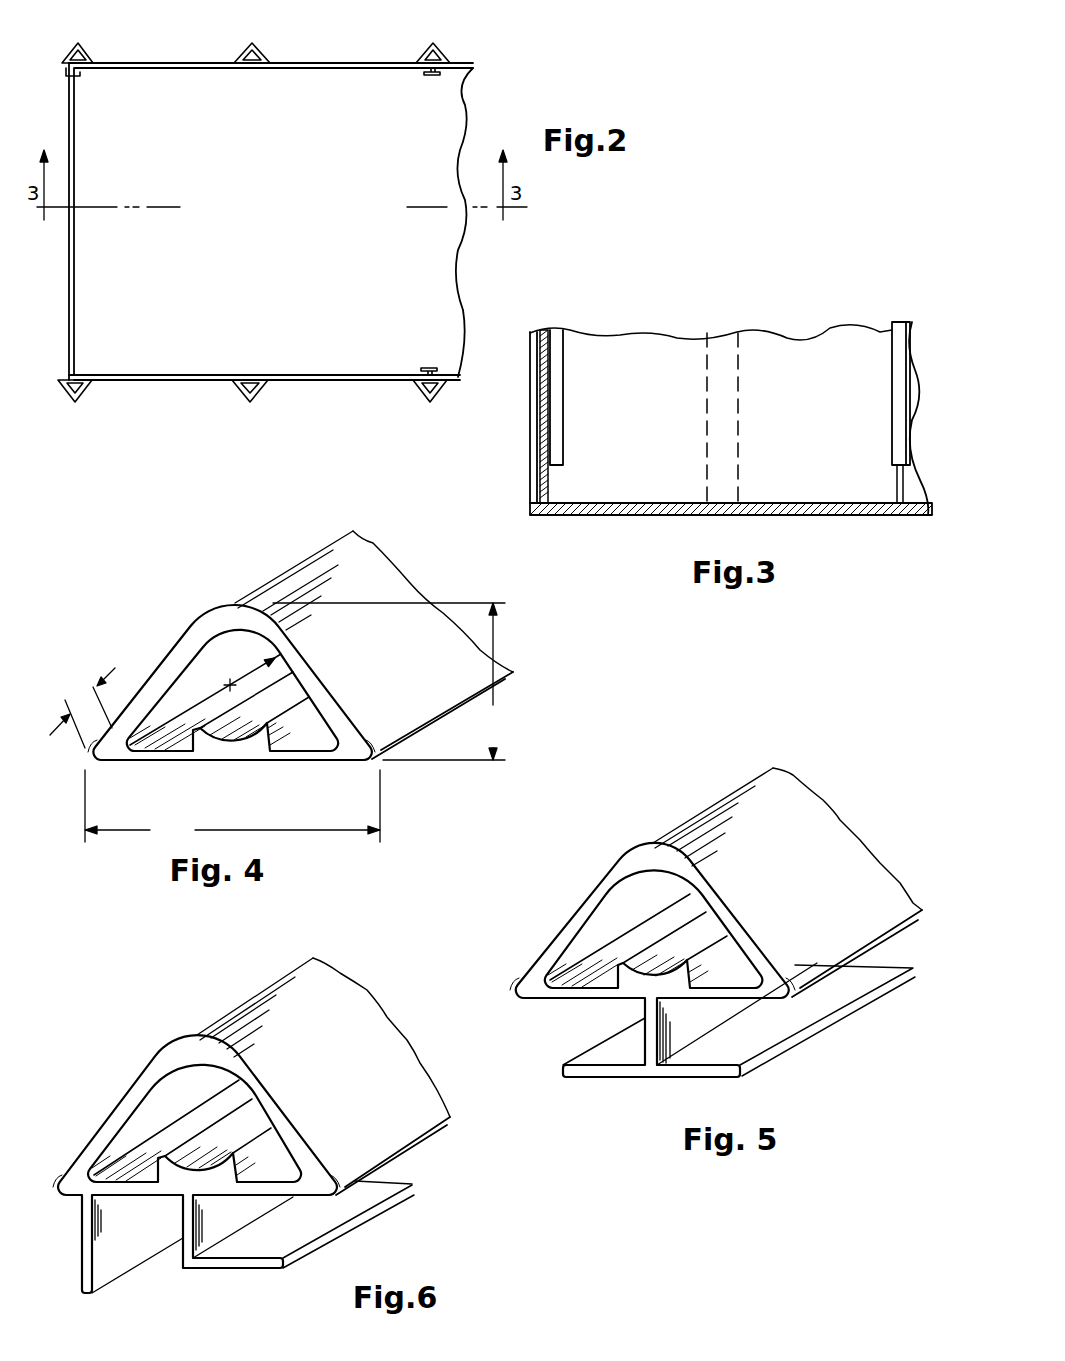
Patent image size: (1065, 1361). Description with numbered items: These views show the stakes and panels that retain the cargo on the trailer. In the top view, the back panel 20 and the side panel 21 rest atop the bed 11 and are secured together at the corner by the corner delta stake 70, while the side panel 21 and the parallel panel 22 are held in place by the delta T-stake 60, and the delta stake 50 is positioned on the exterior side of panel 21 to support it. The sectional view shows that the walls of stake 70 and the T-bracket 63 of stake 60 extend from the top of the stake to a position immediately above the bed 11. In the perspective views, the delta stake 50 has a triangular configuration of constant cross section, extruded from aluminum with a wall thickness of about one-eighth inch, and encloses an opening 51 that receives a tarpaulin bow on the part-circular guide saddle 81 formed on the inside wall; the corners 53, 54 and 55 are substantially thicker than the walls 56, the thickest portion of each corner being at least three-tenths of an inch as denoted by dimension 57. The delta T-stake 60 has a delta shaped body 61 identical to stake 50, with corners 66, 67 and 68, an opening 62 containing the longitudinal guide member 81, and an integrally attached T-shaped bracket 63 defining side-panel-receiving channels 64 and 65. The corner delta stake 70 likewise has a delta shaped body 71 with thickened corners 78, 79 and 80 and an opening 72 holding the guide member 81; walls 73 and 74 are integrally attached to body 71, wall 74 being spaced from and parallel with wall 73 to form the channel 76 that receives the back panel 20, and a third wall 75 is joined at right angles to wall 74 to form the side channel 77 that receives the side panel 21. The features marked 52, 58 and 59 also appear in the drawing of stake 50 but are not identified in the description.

In FIG. 2, the bed 11 is at (271, 221).
In FIG. 3, the bed 11 is at (731, 438).
In FIG. 2, the back panel 20 is at (75, 171).
In FIG. 3, the back panel 20 is at (548, 480).
In FIG. 2, the side panel 21 is at (317, 68).
In FIG. 3, the side panel 21 is at (658, 482).
In FIG. 2, the panel 22 is at (461, 70).
In FIG. 3, the panel 22 is at (915, 488).
In FIG. 2, the delta stake 50 is at (260, 45).
In FIG. 3, the delta stake 50 is at (727, 427).
In FIG. 4, the delta stake 50 is at (275, 669).
In FIG. 4, the opening 51 is at (323, 732).
In FIG. 4, the central rib 52 is at (253, 672).
In FIG. 4, the corner 53 is at (101, 752).
In FIG. 4, the corner 54 is at (372, 756).
In FIG. 4, the corner 55 is at (225, 617).
In FIG. 4, the walls 56 is at (157, 663).
In FIG. 4, the dimension 57 is at (82, 708).
In FIG. 4, the base width 58 is at (232, 806).
In FIG. 4, the height 59 is at (392, 681).
In FIG. 2, the delta T-stake 60 is at (444, 44).
In FIG. 3, the delta T-stake 60 is at (859, 374).
In FIG. 5, the delta T-stake 60 is at (690, 930).
In FIG. 5, the delta shaped body 61 is at (560, 932).
In FIG. 5, the opening 62 is at (673, 925).
In FIG. 3, the T-shaped bracket 63 is at (897, 333).
In FIG. 5, the T-shaped bracket 63 is at (635, 1069).
In FIG. 5, the side-panel-receiving channel 64 is at (598, 1029).
In FIG. 5, the side-panel-receiving channel 65 is at (774, 1031).
In FIG. 5, the corner 66 is at (512, 989).
In FIG. 5, the corner 67 is at (787, 988).
In FIG. 5, the corner 68 is at (648, 853).
In FIG. 2, the corner delta stake 70 is at (83, 45).
In FIG. 3, the corner delta stake 70 is at (560, 393).
In FIG. 6, the corner delta stake 70 is at (276, 1144).
In FIG. 6, the delta shaped body 71 is at (112, 1112).
In FIG. 6, the opening 72 is at (186, 1125).
In FIG. 3, the wall 73 is at (538, 427).
In FIG. 6, the wall 73 is at (82, 1242).
In FIG. 6, the wall 74 is at (183, 1254).
In FIG. 3, the third wall 75 is at (553, 340).
In FIG. 6, the third wall 75 is at (230, 1266).
In FIG. 6, the channel 76 is at (155, 1268).
In FIG. 6, the side channel 77 is at (326, 1213).
In FIG. 6, the thickened corner 78 is at (63, 1179).
In FIG. 6, the thickened corner 79 is at (330, 1182).
In FIG. 6, the thickened corner 80 is at (200, 1050).
In FIG. 4, the guide saddle 81 is at (232, 715).
In FIG. 5, the guide saddle 81 is at (670, 950).
In FIG. 6, the guide saddle 81 is at (213, 1147).